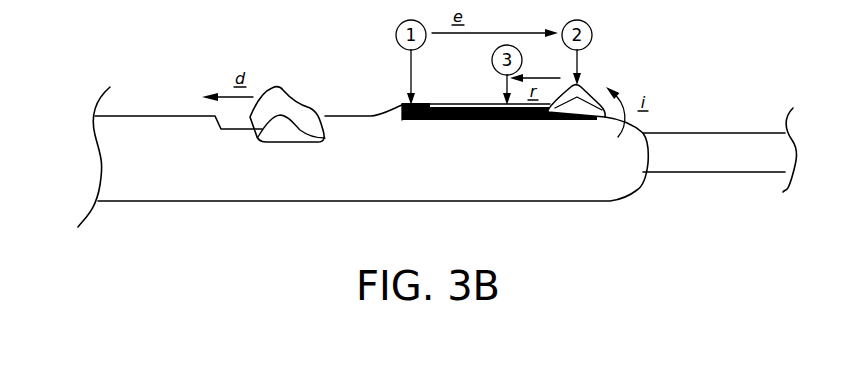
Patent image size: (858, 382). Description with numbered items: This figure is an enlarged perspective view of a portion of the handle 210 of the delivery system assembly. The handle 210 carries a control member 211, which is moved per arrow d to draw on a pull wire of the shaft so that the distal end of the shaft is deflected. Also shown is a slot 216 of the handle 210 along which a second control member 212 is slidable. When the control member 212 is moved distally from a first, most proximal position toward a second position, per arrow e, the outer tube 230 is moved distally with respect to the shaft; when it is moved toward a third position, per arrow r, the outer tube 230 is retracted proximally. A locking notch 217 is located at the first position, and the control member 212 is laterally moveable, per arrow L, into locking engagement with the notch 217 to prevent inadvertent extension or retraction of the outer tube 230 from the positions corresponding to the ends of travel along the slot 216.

The handle 210 is at (295, 210).
The control member 211 is at (280, 97).
The control member 212 is at (590, 93).
The slot 216 is at (593, 128).
The locking notch 217 is at (402, 114).
The outer tube 230 is at (698, 158).